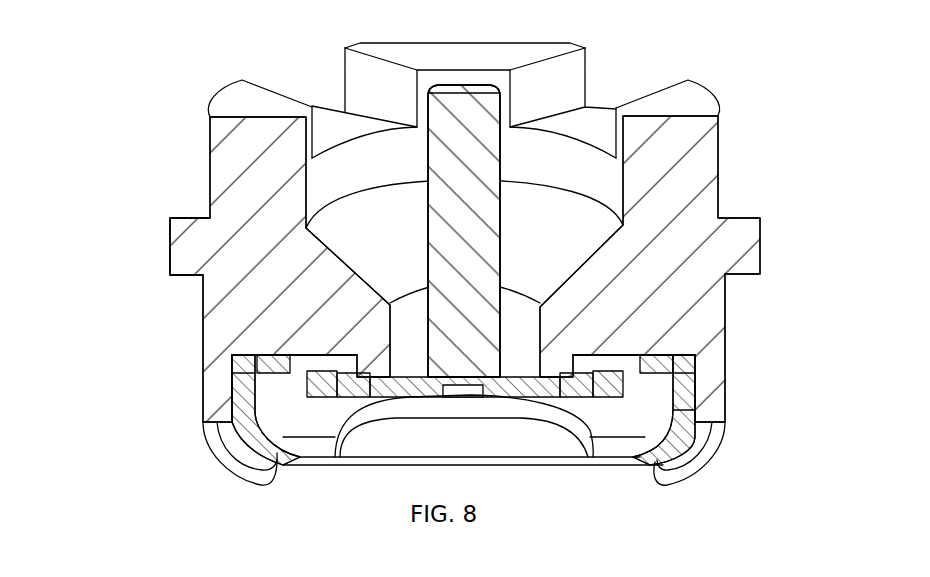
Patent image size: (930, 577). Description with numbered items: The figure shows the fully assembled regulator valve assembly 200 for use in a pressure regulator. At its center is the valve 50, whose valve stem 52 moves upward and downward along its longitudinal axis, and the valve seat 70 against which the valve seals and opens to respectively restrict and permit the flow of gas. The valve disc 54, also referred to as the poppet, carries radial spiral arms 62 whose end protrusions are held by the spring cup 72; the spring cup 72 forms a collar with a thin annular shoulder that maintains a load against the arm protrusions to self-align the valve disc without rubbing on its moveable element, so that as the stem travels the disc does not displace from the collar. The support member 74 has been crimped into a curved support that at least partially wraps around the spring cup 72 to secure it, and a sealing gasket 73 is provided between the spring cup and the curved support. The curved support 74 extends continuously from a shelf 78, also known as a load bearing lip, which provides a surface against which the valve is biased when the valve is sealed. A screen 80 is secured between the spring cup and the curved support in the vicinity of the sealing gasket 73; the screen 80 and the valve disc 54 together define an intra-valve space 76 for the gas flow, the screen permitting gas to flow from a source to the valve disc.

The regulator valve assembly 200 is at (258, 44).
The valve 50 is at (490, 363).
The valve stem 52 is at (460, 162).
The valve disc 54 is at (570, 388).
The spiral arms 62 is at (647, 352).
The valve seat 70 is at (275, 292).
The spring cup 72 is at (243, 393).
The sealing gasket 73 is at (240, 440).
The support member 74 is at (237, 457).
The intra-valve space 76 is at (630, 410).
The shelf 78 is at (227, 320).
The screen 80 is at (537, 457).